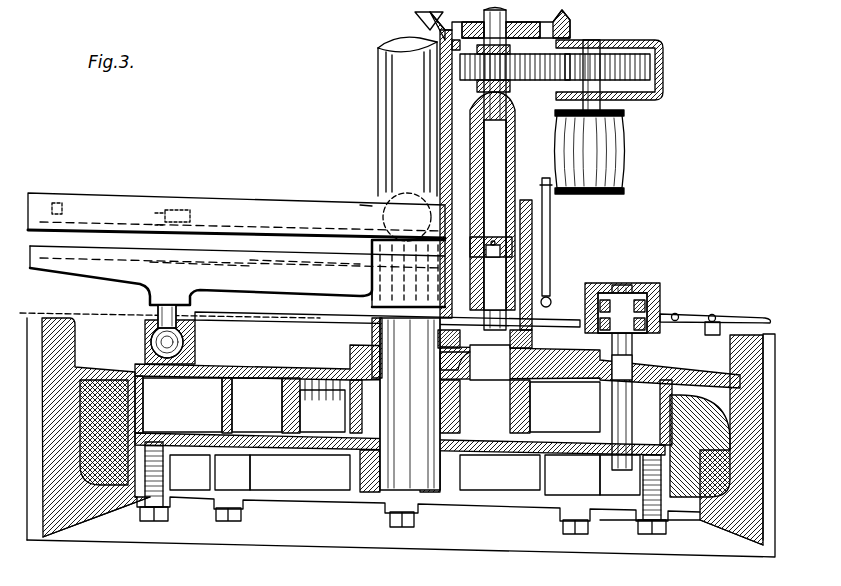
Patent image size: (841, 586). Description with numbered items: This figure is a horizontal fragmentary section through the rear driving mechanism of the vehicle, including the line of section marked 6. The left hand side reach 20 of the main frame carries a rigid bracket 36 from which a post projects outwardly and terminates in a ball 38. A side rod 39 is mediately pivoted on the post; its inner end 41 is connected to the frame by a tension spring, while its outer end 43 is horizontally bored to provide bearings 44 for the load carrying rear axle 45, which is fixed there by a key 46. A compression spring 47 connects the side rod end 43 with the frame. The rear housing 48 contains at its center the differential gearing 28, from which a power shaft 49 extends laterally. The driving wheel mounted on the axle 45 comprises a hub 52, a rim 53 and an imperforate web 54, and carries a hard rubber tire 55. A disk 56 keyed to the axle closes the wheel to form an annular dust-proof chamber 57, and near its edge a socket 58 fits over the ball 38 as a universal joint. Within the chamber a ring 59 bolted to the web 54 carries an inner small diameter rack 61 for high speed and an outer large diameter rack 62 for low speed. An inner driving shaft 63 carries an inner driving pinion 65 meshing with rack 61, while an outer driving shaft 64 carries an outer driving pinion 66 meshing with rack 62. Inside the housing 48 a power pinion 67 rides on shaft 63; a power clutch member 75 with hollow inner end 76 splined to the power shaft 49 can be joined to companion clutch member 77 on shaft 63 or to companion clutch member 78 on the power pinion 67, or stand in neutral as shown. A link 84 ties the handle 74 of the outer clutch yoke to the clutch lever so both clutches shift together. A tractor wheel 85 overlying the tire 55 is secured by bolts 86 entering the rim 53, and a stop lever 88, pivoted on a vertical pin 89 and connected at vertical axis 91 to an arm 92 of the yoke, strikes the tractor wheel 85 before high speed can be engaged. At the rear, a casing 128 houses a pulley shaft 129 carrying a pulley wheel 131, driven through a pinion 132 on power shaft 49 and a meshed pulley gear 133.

The section line 6 is at (21, 328).
The left hand side reach 20 is at (300, 205).
The inner end 41 is at (55, 255).
The rigid bracket 36 is at (202, 240).
The side rod 39 is at (250, 245).
The outer end 43 is at (330, 252).
The compression spring 47 is at (372, 206).
The bearings 44 is at (409, 246).
The power clutch member 75 is at (455, 292).
The rear axle 45 is at (390, 106).
The rear housing 48 is at (563, 24).
The differential gearing 28 is at (420, 15).
The power shaft 49 is at (486, 14).
The pinion 132 is at (460, 66).
The casing 128 is at (663, 48).
The pulley gear 133 is at (632, 60).
The pulley shaft 129 is at (602, 100).
The pulley wheel 131 is at (624, 155).
The handle 74 is at (562, 300).
The hollow inner end 76 is at (512, 240).
The companion clutch member 77 is at (503, 246).
The link 84 is at (533, 255).
The companion clutch member 78 is at (616, 285).
The outer driving shaft 64 is at (645, 290).
The stop lever 88 is at (740, 316).
The vertical pin 89 is at (714, 314).
The vertical axis 91 is at (695, 318).
The arm 92 is at (676, 313).
The socket 58 is at (235, 342).
The disk 56 is at (286, 366).
The ball 38 is at (196, 347).
The tire 55 is at (110, 375).
The rim 53 is at (143, 405).
The tractor wheel 85 is at (100, 515).
The web 54 is at (303, 446).
The rack 62 is at (222, 395).
The rack 61 is at (300, 410).
The dust-proof chamber 57 is at (192, 450).
The ring 59 is at (250, 450).
The hub 52 is at (358, 476).
The outer driving pinion 66 is at (620, 455).
The bolts 86 is at (157, 522).
The inner driving pinion 65 is at (462, 416).
The key 46 is at (373, 337).
The inner driving shaft 63 is at (440, 352).
The power pinion 67 is at (460, 363).